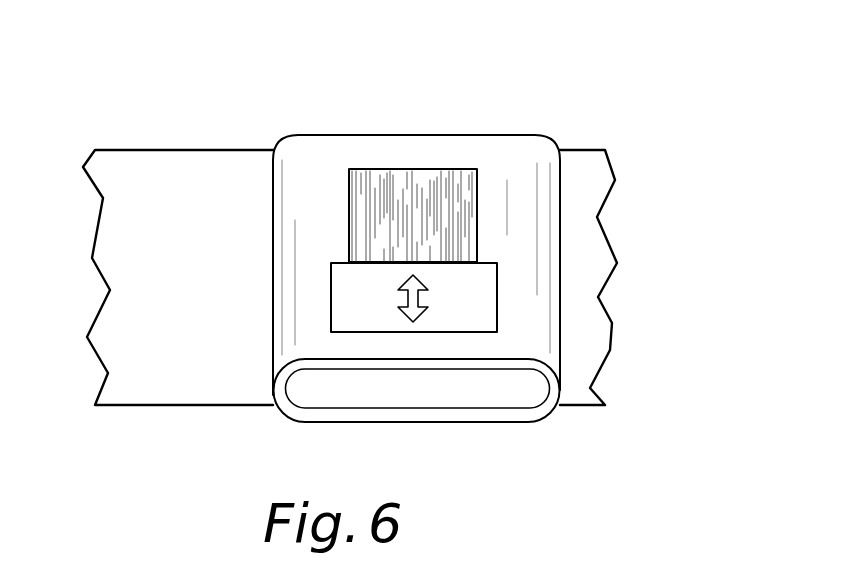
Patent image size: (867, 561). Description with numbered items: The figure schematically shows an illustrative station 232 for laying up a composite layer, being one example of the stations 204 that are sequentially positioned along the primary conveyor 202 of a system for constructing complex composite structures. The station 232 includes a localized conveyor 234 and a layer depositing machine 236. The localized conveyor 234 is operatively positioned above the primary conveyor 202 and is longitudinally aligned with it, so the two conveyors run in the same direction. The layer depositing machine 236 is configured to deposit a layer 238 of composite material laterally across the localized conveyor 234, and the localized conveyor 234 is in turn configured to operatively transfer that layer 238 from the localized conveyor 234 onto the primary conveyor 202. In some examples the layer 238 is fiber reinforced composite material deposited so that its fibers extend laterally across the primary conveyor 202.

The conveyor 202 is at (157, 150).
The stations 204 is at (630, 80).
The station 232 is at (563, 63).
The localized conveyor 234 is at (411, 135).
The layer depositing machine 236 is at (462, 332).
The layer 238 is at (478, 196).